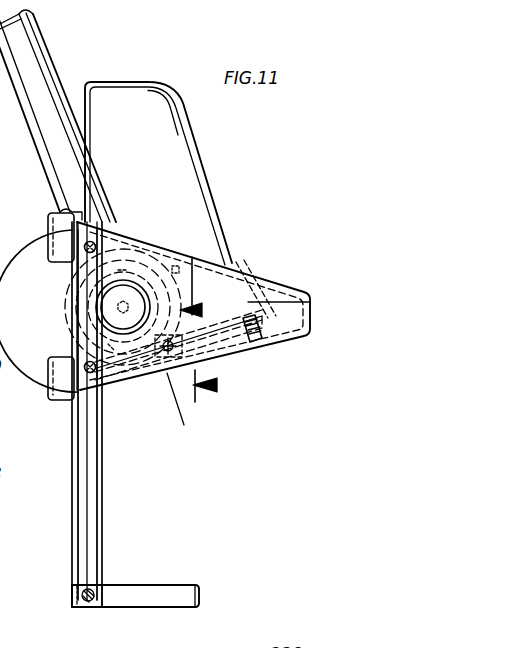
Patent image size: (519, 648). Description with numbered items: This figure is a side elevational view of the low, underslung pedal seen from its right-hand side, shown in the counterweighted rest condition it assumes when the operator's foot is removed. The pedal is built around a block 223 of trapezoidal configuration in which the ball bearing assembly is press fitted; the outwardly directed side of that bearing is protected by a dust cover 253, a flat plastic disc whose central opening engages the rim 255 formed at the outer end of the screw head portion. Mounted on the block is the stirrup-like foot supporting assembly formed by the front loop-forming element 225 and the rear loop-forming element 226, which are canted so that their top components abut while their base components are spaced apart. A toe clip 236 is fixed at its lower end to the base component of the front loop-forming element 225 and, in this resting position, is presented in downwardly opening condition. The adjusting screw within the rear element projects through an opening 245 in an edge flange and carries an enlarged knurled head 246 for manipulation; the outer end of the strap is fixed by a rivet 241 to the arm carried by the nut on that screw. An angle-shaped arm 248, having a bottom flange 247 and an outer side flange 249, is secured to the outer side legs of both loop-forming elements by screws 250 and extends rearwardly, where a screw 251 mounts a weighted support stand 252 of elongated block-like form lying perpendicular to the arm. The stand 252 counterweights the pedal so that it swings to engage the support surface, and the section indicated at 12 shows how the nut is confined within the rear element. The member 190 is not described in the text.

The support arm 190 is at (37, 62).
The toe clip 236 is at (128, 80).
The block 223 is at (56, 273).
The arm 248 is at (103, 484).
The bottom flange 247 is at (80, 536).
The outer side flange 249 is at (97, 541).
The rivet 241 is at (135, 616).
The weighted support stand 252 is at (177, 592).
The screw 251 is at (88, 608).
The front loop-forming element 225 is at (253, 280).
The rim 255 is at (128, 297).
The dust cover 253 is at (58, 320).
The screws 250 is at (95, 244).
The opening 245 is at (240, 323).
The knurled head 246 is at (265, 340).
The section line 12- 12 is at (212, 329).
The rear loop-forming element 226 is at (187, 411).